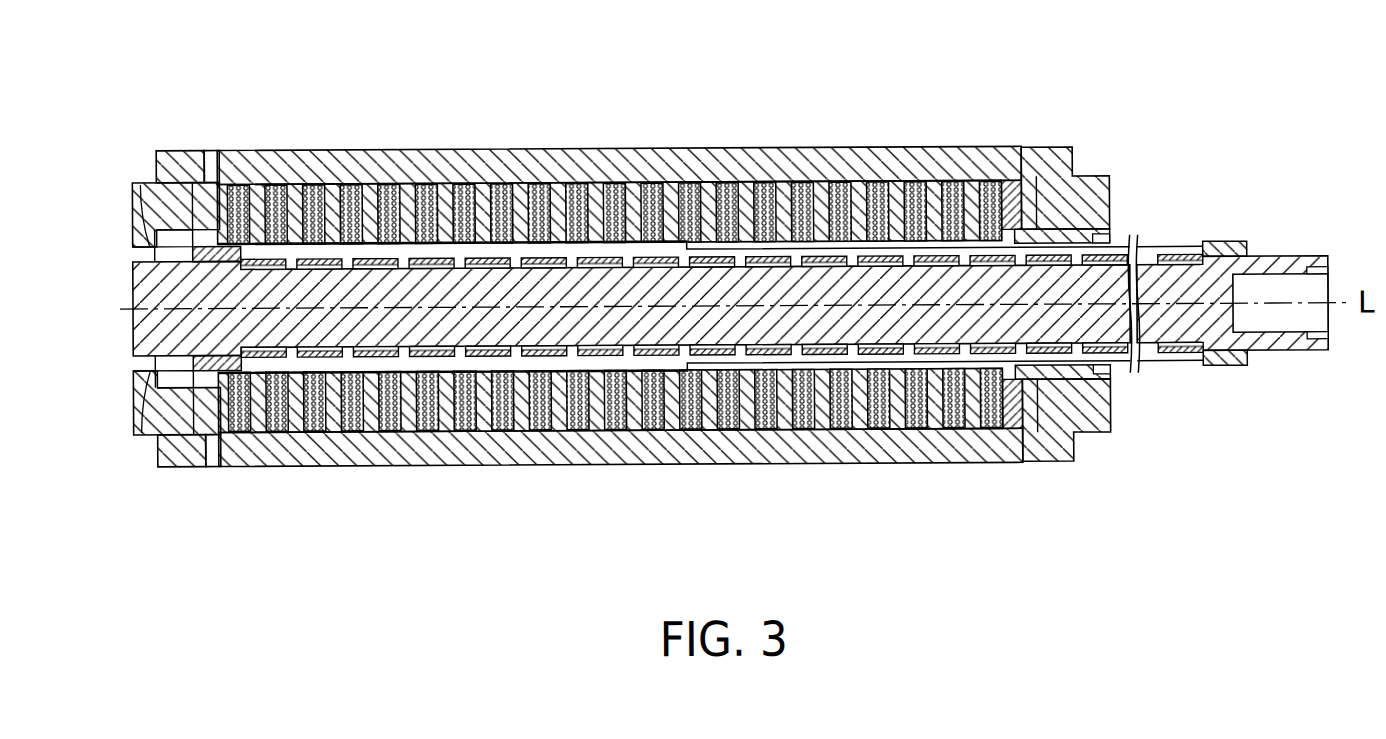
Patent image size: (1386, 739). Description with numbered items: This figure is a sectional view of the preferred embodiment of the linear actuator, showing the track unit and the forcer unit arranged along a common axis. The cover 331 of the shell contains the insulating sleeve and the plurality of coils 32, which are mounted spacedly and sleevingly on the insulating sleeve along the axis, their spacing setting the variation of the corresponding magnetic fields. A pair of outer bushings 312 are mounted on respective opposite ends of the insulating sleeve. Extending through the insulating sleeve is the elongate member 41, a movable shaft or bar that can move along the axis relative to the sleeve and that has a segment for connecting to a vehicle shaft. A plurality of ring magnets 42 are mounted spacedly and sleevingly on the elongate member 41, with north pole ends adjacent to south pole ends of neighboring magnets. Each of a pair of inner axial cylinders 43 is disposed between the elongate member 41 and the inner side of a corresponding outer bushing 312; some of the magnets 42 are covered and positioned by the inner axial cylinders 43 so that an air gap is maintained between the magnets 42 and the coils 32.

The outer bushing 312 is at (147, 180).
The inner axial cylinder 43 is at (222, 148).
The coil 32 is at (576, 182).
The magnet 42 is at (484, 356).
The elongate member 41 is at (1153, 330).
The cover 331 is at (378, 461).